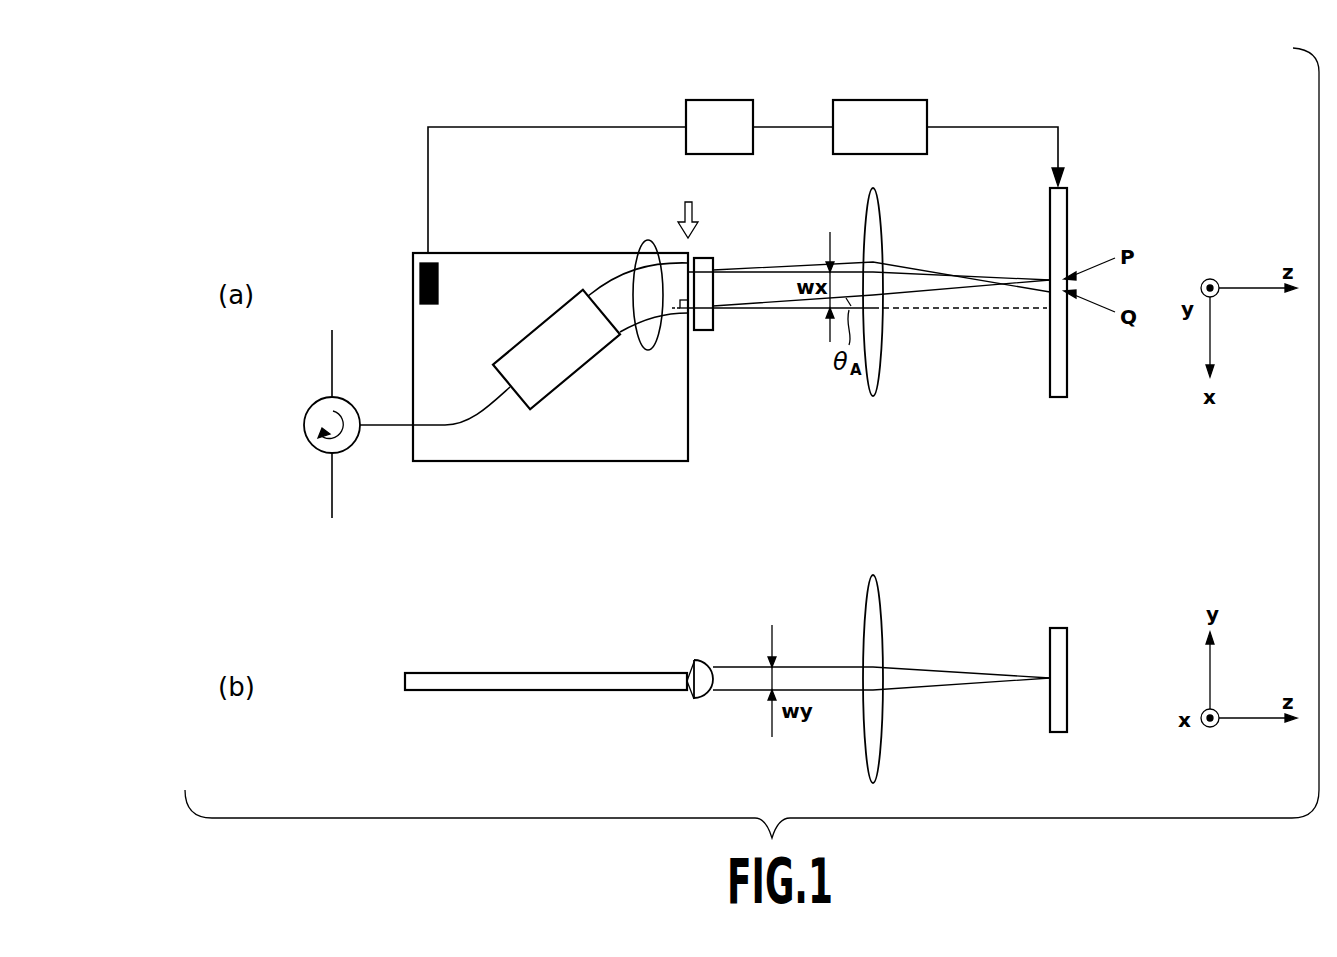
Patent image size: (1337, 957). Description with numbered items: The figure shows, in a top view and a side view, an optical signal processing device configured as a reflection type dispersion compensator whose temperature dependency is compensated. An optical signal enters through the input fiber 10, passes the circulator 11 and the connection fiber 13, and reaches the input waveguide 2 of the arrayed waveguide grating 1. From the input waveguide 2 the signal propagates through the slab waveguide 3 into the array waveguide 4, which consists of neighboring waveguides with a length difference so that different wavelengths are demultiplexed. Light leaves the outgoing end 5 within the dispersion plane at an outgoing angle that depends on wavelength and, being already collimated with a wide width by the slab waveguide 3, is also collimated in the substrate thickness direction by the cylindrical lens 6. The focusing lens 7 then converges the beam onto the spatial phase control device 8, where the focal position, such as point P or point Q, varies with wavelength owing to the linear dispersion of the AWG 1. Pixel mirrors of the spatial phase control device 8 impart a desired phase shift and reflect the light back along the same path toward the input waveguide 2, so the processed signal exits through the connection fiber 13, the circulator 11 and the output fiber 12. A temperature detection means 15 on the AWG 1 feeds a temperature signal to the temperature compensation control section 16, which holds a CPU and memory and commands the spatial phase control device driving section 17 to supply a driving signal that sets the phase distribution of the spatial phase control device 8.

The arrayed waveguide grating 1 is at (570, 445).
The input waveguide 2 is at (447, 428).
The slab waveguide 3 is at (527, 347).
The array waveguide 4 is at (663, 258).
The outgoing end 5 is at (688, 200).
The cylindrical lens 6 is at (705, 330).
The focusing lens 7 is at (878, 370).
The spatial phase control device 8 is at (1058, 378).
The input fiber 10 is at (331, 344).
The circulator 11 is at (316, 409).
The output fiber 12 is at (332, 500).
The connection fiber 13 is at (398, 422).
The temperature detection means 15 is at (421, 262).
The temperature compensation control section 16 is at (721, 100).
The spatial phase control device driving section 17 is at (872, 100).